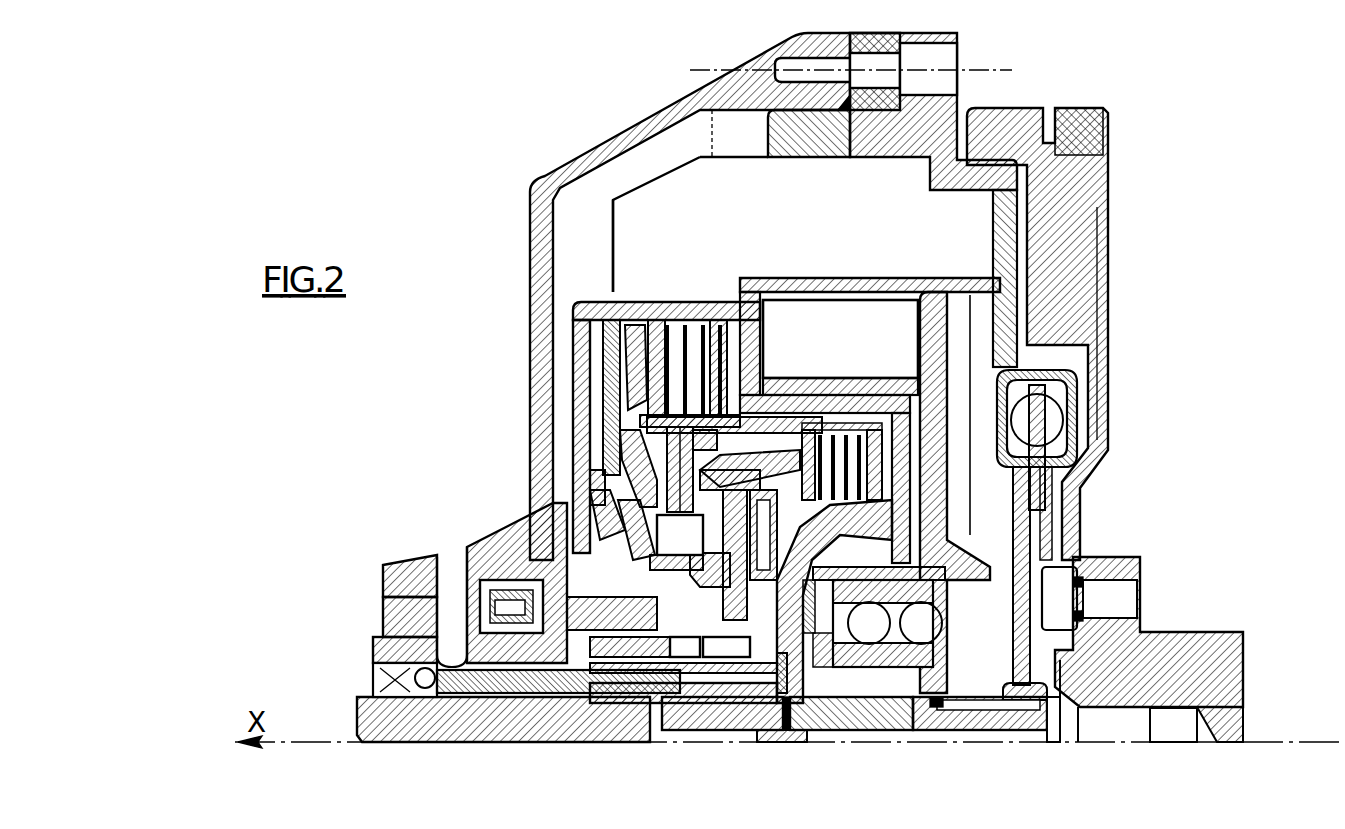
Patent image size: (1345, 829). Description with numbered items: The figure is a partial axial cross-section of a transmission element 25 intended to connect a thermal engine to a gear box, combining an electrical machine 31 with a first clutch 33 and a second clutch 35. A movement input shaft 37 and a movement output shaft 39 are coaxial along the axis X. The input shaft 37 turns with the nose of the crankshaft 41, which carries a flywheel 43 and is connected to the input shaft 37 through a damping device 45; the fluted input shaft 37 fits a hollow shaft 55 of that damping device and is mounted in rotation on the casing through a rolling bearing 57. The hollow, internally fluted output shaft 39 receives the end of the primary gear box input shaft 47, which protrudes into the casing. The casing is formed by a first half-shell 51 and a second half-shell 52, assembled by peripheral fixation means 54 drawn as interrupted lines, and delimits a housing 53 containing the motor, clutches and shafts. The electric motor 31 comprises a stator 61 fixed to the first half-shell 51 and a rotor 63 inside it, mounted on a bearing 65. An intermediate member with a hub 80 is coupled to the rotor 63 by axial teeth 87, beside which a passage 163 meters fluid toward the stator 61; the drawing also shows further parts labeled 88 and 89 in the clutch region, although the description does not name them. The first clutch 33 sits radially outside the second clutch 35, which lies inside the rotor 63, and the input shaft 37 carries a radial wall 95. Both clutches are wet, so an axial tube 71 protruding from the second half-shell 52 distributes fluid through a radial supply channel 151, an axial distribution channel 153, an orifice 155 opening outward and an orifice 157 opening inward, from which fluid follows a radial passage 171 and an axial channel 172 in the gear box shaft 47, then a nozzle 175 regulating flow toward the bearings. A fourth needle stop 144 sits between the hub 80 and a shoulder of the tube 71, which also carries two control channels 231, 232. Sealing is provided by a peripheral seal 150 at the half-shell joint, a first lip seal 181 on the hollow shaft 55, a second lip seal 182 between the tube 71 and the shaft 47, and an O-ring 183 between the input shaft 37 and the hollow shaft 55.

The transmission element 25 is at (460, 425).
The electrical machine 31 is at (598, 250).
The first clutch 33 is at (620, 405).
The second clutch 35 is at (882, 490).
The movement input shaft 37 is at (1013, 730).
The movement output shaft 39 is at (728, 740).
The crankshaft 41 is at (1235, 680).
The flywheel 43 is at (1110, 183).
The damping device 45 is at (1090, 372).
The primary gear box input shaft 47 is at (372, 721).
The first half-shell 51 is at (950, 500).
The second half-shell 52 is at (383, 580).
The housing 53 is at (612, 178).
The fixation means 54 is at (1012, 70).
The hollow shaft 55 is at (1058, 735).
The rolling bearing 57 is at (883, 690).
The stator 61 is at (803, 217).
The rotor 63 is at (840, 347).
The bearing 65 is at (950, 610).
The axial tube 71 is at (373, 645).
The hub 80 is at (522, 590).
The axial teeth 87 is at (660, 300).
The clutch housing 88 is at (738, 298).
The clutch shell 89 is at (602, 302).
The radial wall 95 is at (812, 545).
The fourth needle stop 144 is at (455, 595).
The peripheral seal 150 is at (850, 95).
The first fluid supply radial channel 151 is at (447, 622).
The first distribution axial channel 153 is at (458, 670).
The orifice 155 is at (592, 650).
The orifice 157 is at (616, 700).
The passage 163 is at (686, 300).
The radial passage 171 is at (651, 705).
The axial channel 172 is at (748, 740).
The nozzle 175 is at (815, 735).
The first lip seal 181 is at (985, 697).
The second lip seal 182 is at (380, 678).
The O-ring 183 is at (935, 710).
The channel 231 is at (545, 650).
The channel 232 is at (690, 720).